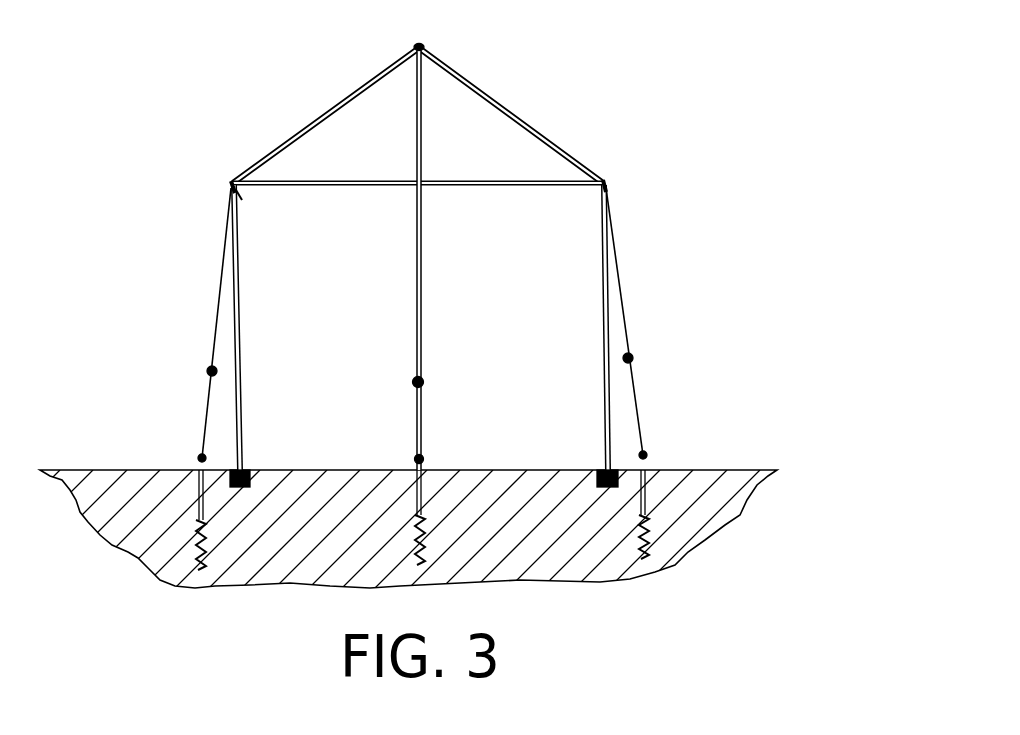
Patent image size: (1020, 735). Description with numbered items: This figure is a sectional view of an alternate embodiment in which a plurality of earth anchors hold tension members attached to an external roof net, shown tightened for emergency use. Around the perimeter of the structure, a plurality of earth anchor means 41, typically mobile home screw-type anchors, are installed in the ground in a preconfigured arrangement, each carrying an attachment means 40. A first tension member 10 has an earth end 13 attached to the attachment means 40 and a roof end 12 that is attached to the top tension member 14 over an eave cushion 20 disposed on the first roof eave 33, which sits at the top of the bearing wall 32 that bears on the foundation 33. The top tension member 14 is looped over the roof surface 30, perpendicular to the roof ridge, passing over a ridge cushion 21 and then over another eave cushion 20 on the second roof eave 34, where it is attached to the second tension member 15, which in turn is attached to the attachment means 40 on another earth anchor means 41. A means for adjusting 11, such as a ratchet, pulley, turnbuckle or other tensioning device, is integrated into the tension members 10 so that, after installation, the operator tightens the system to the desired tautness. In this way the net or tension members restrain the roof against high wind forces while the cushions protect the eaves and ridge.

The first tension member 10 is at (422, 285).
The means for adjusting 11 is at (207, 370).
The roof end 12 is at (612, 188).
The earth end 13 is at (637, 427).
The top tension member 14 is at (515, 110).
The second tension member 15 is at (218, 300).
The eave cushion 20 is at (232, 183).
The ridge cushion 21 is at (423, 46).
The roof surface 30 is at (527, 135).
The bearing wall 32 is at (242, 327).
The first roof eave 33 is at (250, 488).
The second roof eave 34 is at (238, 193).
The attachment means 40 is at (645, 453).
The earth anchor means 41 is at (648, 532).